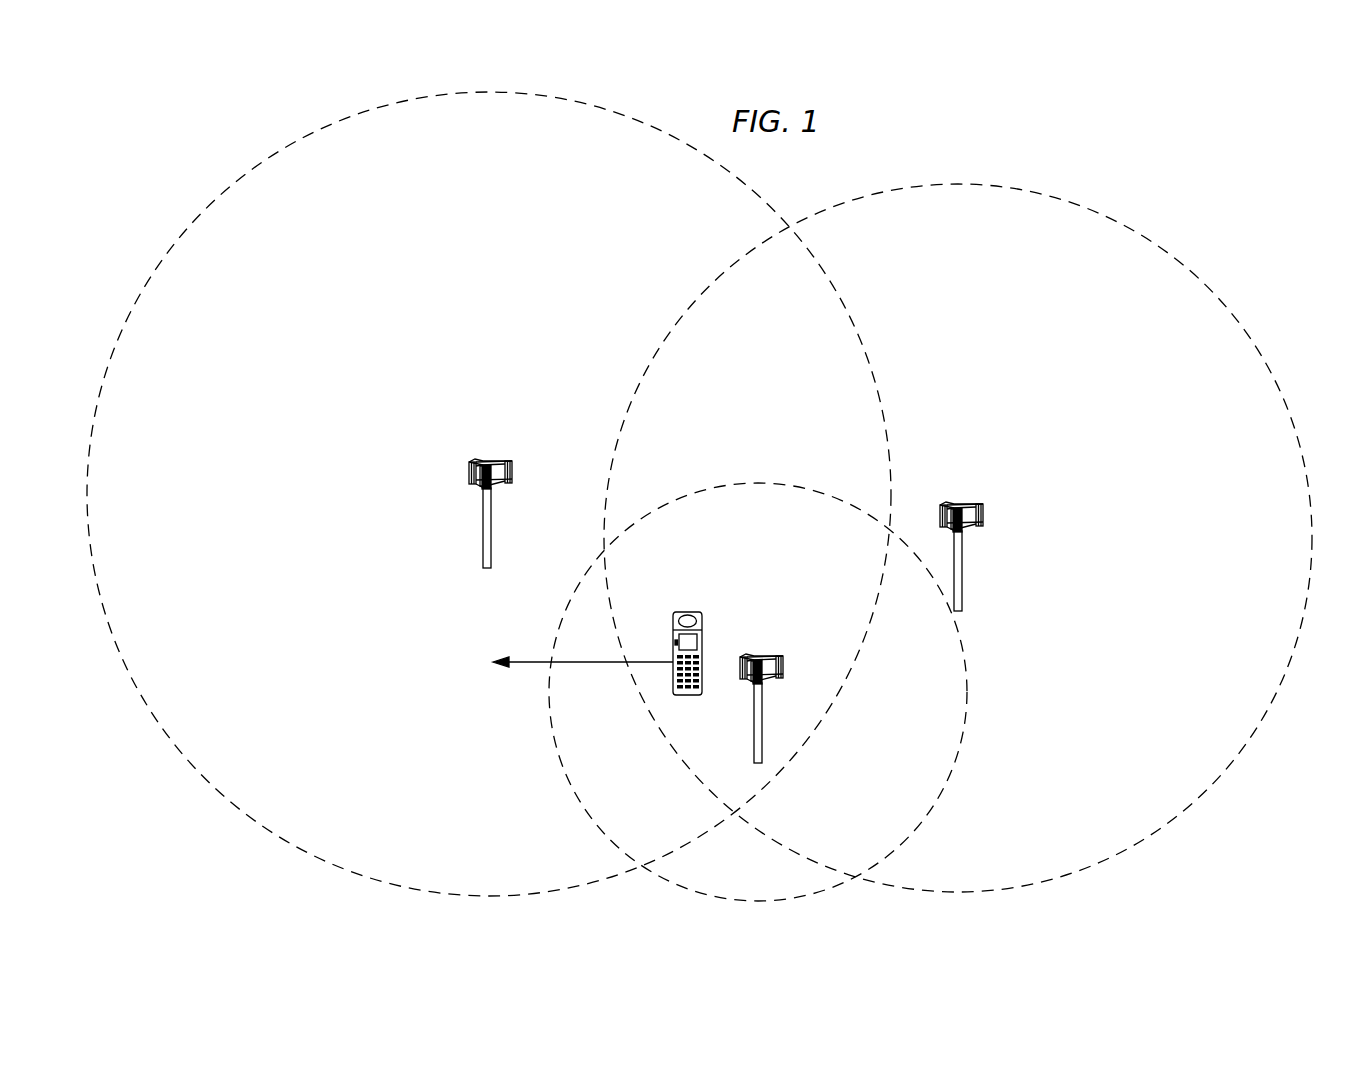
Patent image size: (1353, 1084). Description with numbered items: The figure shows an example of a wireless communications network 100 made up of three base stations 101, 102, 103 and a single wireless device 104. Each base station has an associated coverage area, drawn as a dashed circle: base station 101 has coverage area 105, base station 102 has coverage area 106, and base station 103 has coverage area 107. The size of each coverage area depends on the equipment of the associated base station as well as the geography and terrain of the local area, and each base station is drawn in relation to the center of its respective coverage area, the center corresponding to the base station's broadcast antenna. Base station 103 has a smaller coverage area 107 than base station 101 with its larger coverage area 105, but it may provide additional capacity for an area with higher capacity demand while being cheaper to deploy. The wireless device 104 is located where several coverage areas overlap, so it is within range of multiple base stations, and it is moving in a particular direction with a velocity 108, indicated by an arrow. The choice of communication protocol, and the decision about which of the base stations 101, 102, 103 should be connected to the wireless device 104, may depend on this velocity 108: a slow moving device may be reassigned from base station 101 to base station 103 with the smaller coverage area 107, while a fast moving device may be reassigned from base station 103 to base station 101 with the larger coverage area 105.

The wireless communications network 100 is at (933, 141).
The base station 101 is at (470, 466).
The base station 102 is at (984, 516).
The base station 103 is at (762, 656).
The wireless device 104 is at (689, 612).
The coverage area 105 is at (250, 164).
The coverage area 106 is at (1114, 220).
The coverage area 107 is at (733, 484).
The velocity 108 is at (541, 661).